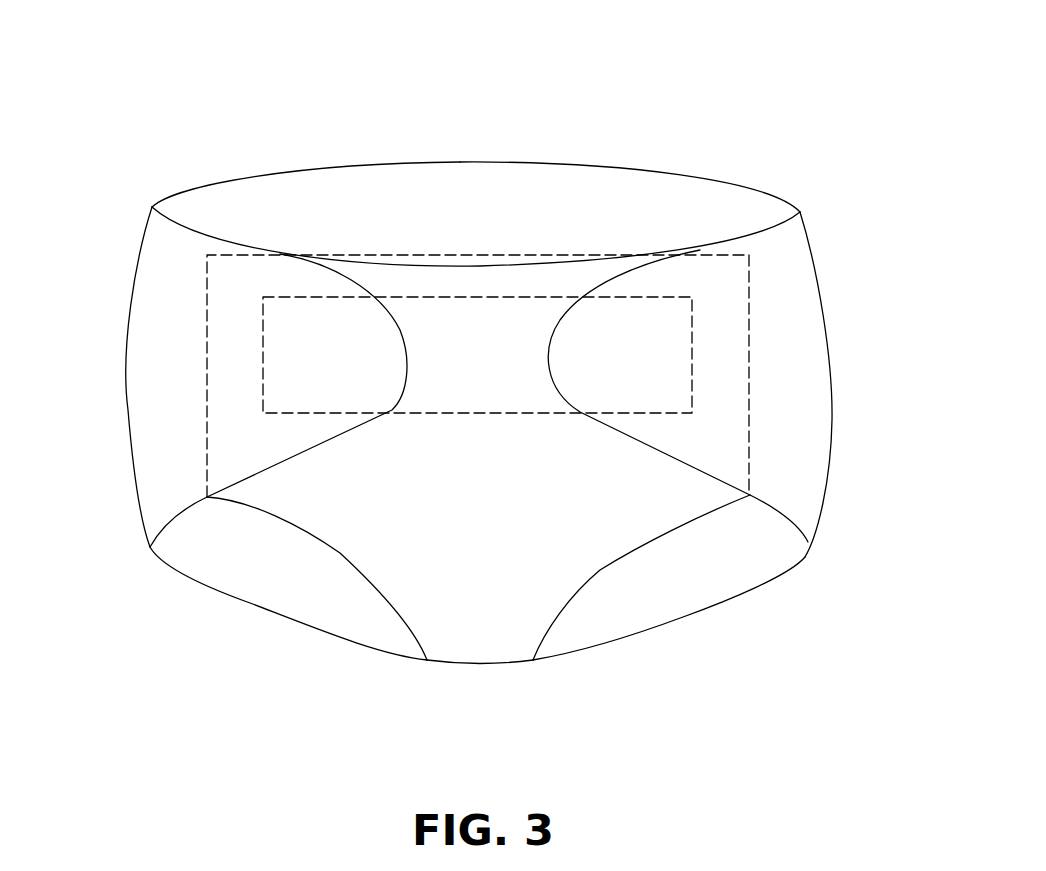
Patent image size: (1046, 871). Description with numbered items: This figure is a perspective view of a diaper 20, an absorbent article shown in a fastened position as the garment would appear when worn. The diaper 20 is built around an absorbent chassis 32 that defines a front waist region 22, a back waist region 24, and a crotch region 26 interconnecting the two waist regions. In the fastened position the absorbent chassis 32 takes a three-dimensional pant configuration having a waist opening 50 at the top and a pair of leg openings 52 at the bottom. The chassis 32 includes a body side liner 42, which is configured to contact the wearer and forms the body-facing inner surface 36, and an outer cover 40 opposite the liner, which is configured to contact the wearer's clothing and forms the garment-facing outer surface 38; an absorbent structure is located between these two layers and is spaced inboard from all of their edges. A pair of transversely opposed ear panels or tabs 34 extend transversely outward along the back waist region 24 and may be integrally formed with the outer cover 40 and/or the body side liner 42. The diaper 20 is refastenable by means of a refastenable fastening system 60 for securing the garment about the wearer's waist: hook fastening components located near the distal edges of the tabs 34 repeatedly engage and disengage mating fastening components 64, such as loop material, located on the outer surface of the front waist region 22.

The diaper 20 is at (617, 105).
The front waist region 22 is at (470, 275).
The back waist region 24 is at (655, 190).
The crotch region 26 is at (448, 640).
The absorbent chassis 32 is at (315, 502).
The ear panels or tabs 34 is at (370, 373).
The body-facing inner surface 36 is at (245, 215).
The garment-facing outer surface 38 is at (152, 393).
The outer cover 40 is at (512, 622).
The body side liner 42 is at (453, 170).
The waist opening 50 is at (369, 197).
The leg openings 52 is at (297, 590).
The refastenable fastening system 60 is at (520, 375).
The mating fastening components 64 is at (420, 330).